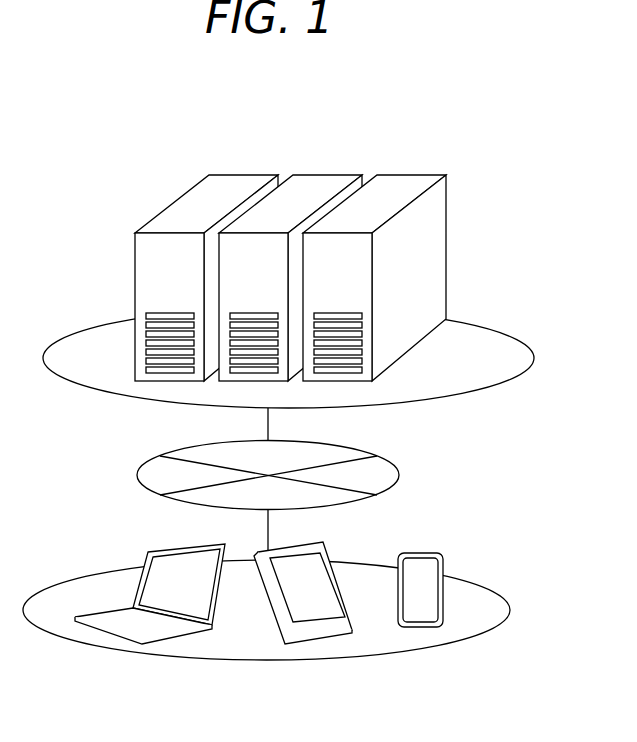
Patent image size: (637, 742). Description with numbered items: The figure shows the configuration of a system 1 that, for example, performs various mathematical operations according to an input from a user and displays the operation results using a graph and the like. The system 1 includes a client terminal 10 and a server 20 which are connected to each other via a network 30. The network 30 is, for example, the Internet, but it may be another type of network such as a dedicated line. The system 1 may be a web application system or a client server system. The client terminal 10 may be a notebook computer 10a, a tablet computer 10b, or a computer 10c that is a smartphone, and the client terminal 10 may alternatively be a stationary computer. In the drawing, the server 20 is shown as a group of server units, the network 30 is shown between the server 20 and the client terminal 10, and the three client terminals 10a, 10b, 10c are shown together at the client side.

The system 1 is at (455, 115).
The server 20 is at (106, 198).
The network 30 is at (404, 446).
The client terminal 10 is at (52, 527).
The notebook computer 10a is at (147, 555).
The tablet computer 10b is at (325, 546).
The computer that is a smartphone 10c is at (444, 564).